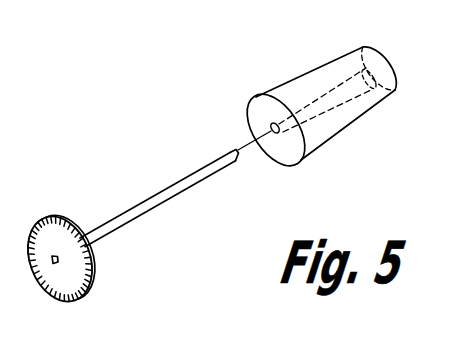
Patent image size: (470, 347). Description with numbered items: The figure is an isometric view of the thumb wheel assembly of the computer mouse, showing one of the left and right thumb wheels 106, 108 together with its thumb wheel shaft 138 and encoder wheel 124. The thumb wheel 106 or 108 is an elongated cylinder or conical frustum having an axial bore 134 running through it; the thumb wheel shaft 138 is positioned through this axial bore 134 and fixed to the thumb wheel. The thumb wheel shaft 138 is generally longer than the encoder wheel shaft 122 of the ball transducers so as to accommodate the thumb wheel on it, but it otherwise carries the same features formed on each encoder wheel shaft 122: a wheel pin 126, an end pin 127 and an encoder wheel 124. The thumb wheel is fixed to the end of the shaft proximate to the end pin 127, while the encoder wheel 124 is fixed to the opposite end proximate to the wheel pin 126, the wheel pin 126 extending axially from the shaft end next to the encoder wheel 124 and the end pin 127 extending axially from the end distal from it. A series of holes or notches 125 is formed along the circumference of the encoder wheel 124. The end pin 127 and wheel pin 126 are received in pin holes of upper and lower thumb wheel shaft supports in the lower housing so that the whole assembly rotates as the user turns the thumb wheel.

The left thumb wheel 106 is at (323, 88).
The right thumb wheel 108 is at (315, 72).
The encoder wheel shaft 122 is at (175, 186).
The thumb wheel shaft 138 is at (146, 203).
The axial bore 134 is at (271, 127).
The end pin 127 is at (234, 154).
The encoder wheel 124 is at (42, 218).
The holes or notches 125 is at (92, 268).
The wheel pin 126 is at (52, 261).